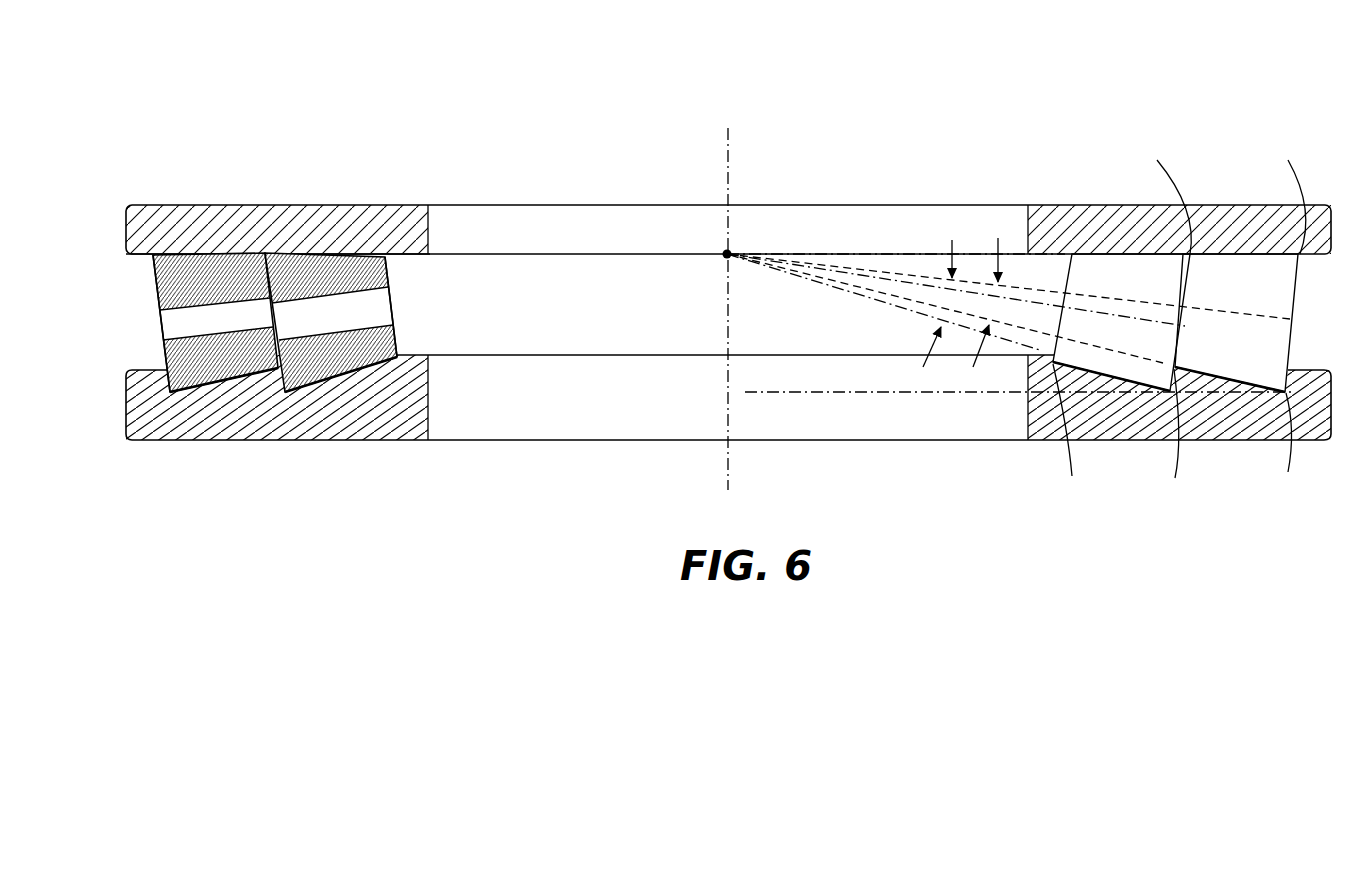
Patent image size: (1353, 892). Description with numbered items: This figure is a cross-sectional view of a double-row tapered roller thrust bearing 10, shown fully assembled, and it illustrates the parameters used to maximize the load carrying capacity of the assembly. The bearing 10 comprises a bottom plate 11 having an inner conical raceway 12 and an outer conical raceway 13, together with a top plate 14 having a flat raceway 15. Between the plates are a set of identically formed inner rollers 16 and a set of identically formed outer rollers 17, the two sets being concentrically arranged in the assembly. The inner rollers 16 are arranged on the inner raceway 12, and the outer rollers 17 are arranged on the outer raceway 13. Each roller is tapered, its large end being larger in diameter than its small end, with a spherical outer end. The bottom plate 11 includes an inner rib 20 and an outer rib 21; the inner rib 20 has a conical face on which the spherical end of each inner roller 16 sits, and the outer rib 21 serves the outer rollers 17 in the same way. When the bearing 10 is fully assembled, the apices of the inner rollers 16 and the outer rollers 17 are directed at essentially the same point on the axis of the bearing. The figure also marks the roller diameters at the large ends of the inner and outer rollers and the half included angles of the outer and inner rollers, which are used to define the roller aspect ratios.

The double-row tapered roller thrust bearing 10 is at (694, 293).
The bottom plate 11 is at (160, 442).
The inner conical raceway 12 is at (176, 383).
The outer conical raceway 13 is at (366, 383).
The top plate 14 is at (240, 204).
The flat raceway 15 is at (140, 255).
The inner rollers 16 is at (397, 337).
The outer rollers 17 is at (158, 355).
The inner rib 20 is at (368, 374).
The outer rib 21 is at (237, 374).